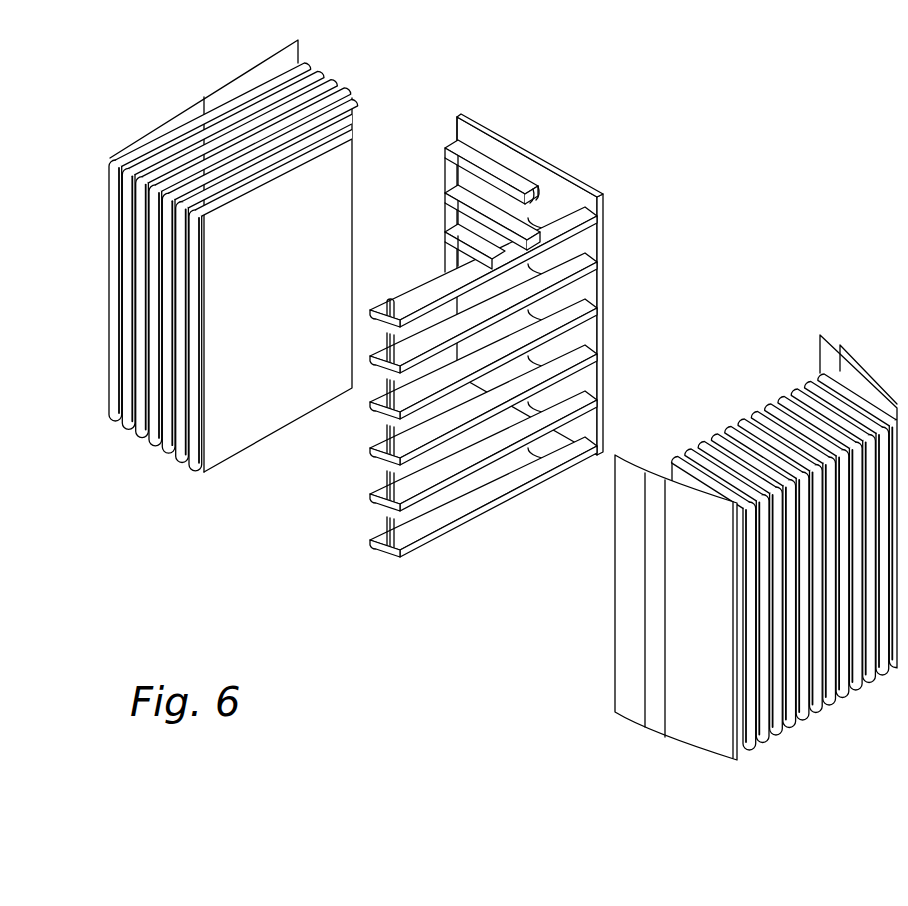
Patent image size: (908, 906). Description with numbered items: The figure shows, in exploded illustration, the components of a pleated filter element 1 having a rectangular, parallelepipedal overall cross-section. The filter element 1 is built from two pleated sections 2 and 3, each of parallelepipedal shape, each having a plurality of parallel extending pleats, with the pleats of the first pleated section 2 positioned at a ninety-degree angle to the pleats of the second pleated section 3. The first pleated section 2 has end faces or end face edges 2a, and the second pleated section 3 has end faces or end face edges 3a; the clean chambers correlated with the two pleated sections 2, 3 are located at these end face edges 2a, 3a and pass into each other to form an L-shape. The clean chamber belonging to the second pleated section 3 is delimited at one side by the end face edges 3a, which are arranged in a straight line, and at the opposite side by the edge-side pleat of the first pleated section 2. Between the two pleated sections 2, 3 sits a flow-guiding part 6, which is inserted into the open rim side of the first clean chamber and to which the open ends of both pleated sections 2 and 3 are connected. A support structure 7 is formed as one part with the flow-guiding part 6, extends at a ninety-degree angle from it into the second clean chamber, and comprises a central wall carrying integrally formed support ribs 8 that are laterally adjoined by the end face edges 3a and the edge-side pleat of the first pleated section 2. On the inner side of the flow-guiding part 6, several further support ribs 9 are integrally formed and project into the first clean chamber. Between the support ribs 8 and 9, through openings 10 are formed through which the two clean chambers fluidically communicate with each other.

The filter element 1 is at (748, 97).
The first pleated section 2 is at (118, 450).
The end face edges of the first pleated section 2a is at (317, 85).
The second pleated section 3 is at (848, 707).
The end face edges of the second pleated section 3a is at (782, 392).
The flow-guiding part 6 is at (540, 163).
The support structure 7 is at (397, 524).
The support ribs 8 is at (378, 456).
The support ribs 9 is at (455, 158).
The through openings 10 is at (567, 297).